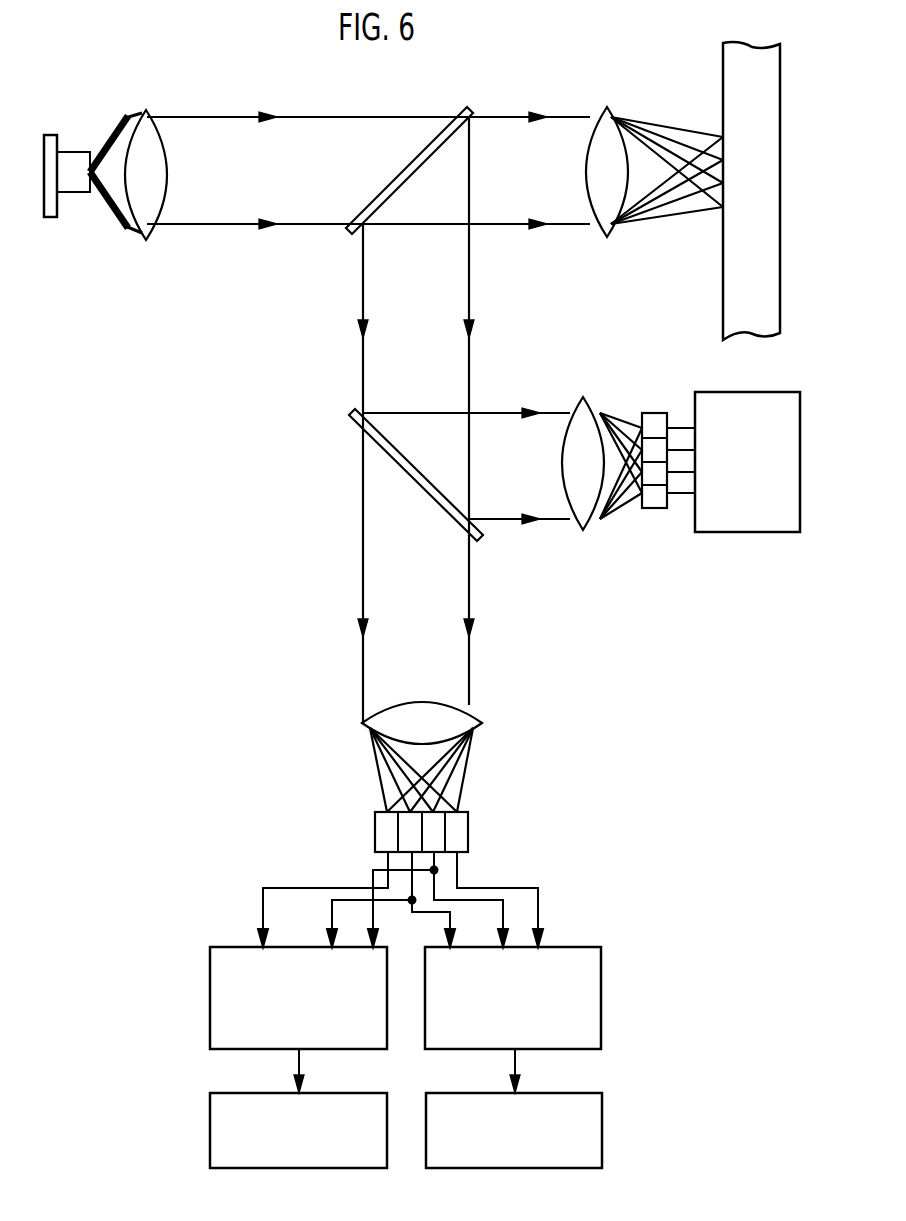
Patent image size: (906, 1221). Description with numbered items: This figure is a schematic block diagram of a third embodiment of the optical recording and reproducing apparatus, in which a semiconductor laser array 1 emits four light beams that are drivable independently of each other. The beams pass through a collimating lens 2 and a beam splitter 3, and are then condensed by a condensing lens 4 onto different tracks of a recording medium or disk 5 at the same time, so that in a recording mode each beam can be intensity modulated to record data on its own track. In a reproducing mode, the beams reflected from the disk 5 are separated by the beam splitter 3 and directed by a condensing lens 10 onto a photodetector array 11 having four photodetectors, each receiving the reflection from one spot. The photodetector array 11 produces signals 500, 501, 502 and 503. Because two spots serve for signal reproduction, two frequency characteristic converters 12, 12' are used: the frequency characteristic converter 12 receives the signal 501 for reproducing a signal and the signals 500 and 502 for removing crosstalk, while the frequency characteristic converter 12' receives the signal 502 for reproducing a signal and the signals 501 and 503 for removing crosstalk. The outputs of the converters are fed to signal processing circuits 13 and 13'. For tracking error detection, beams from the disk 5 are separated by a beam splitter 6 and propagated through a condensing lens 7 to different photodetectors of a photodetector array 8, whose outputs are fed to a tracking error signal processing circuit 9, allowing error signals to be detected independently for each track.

The semiconductor laser array 1 is at (52, 133).
The collimating lens 2 is at (148, 109).
The beam splitter 3 is at (471, 106).
The condensing lens 4 is at (609, 106).
The recording medium (disk) 5 is at (722, 78).
The beam splitter 6 is at (352, 409).
The condensing lens 7 is at (584, 397).
The photodetector array 8 is at (655, 412).
The tracking error signal processing circuit 9 is at (696, 398).
The condensing lens 10 is at (361, 722).
The photodetector array 11 is at (468, 836).
The frequency characteristic converter 12 is at (544, 1020).
The frequency characteristic converter 12' is at (271, 1020).
The signal processing circuit 13 is at (545, 1130).
The signal processing circuit 13' is at (274, 1130).
The signal 500 is at (457, 868).
The signal 501 is at (503, 899).
The signal 502 is at (388, 865).
The signal 503 is at (288, 889).